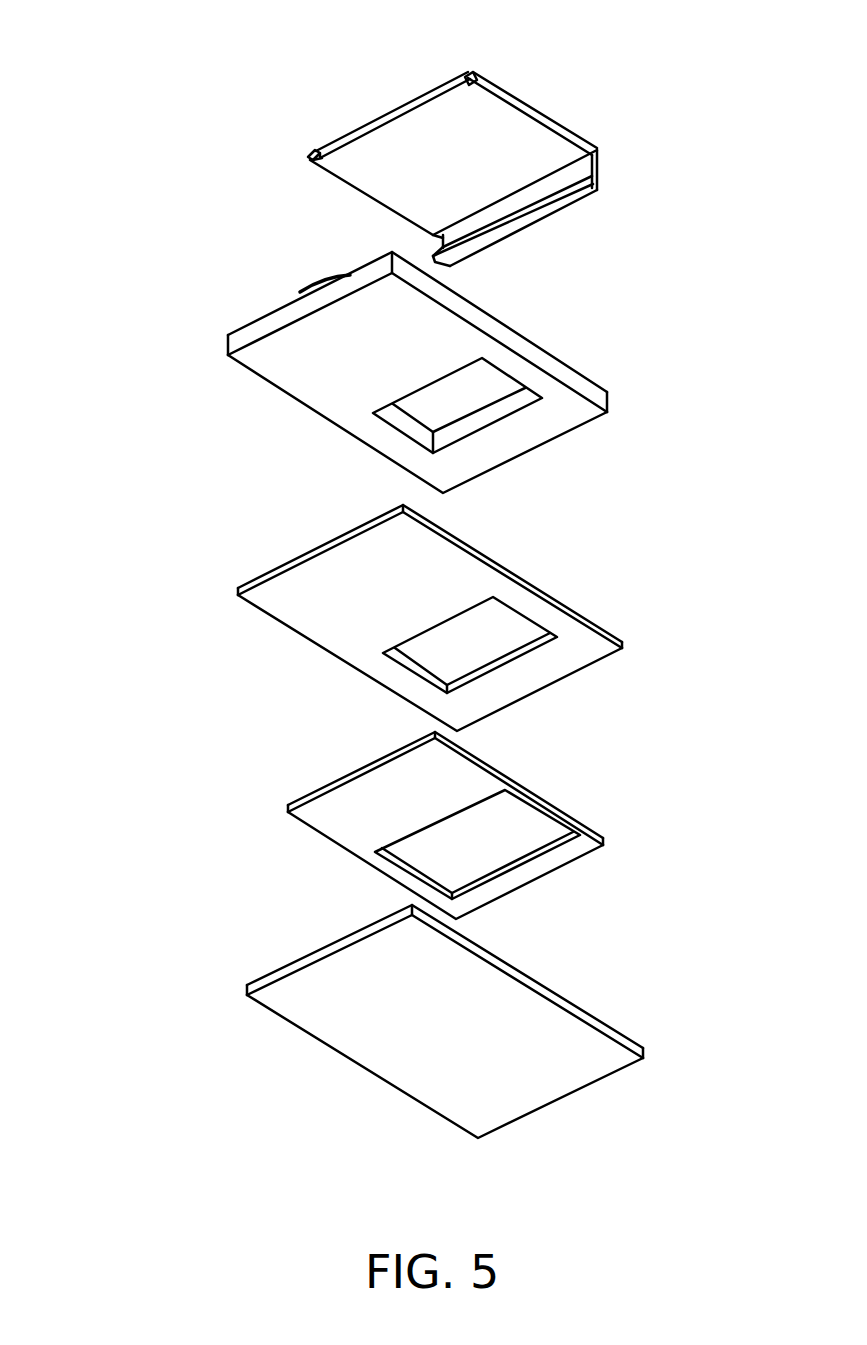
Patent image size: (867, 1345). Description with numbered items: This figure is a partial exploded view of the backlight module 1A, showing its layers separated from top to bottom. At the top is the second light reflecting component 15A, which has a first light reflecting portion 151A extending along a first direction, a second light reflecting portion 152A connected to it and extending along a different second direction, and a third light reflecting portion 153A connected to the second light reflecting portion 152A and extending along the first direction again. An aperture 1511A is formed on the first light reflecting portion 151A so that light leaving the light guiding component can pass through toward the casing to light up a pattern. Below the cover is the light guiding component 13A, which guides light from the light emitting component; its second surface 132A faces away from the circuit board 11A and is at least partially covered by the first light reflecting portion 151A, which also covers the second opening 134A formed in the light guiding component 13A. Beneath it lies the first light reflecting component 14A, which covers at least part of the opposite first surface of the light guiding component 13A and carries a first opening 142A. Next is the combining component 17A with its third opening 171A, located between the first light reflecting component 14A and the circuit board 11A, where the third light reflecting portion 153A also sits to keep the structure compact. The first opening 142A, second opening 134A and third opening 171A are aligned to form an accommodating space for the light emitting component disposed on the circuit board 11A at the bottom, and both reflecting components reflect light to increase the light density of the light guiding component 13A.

The backlight module 1A is at (182, 62).
The aperture 1511A is at (385, 110).
The first light reflecting portion 151A is at (568, 148).
The second light reflecting portion 152A is at (595, 162).
The third light reflecting portion 153A is at (572, 197).
The second light reflecting component 15A is at (703, 100).
The light guiding component 13A is at (594, 341).
The second surface 132A is at (292, 373).
The second opening 134A is at (498, 414).
The first light reflecting component 14A is at (598, 605).
The first opening 142A is at (500, 645).
The combining component 17A is at (588, 843).
The third opening 171A is at (518, 852).
The circuit board 11A is at (582, 1068).